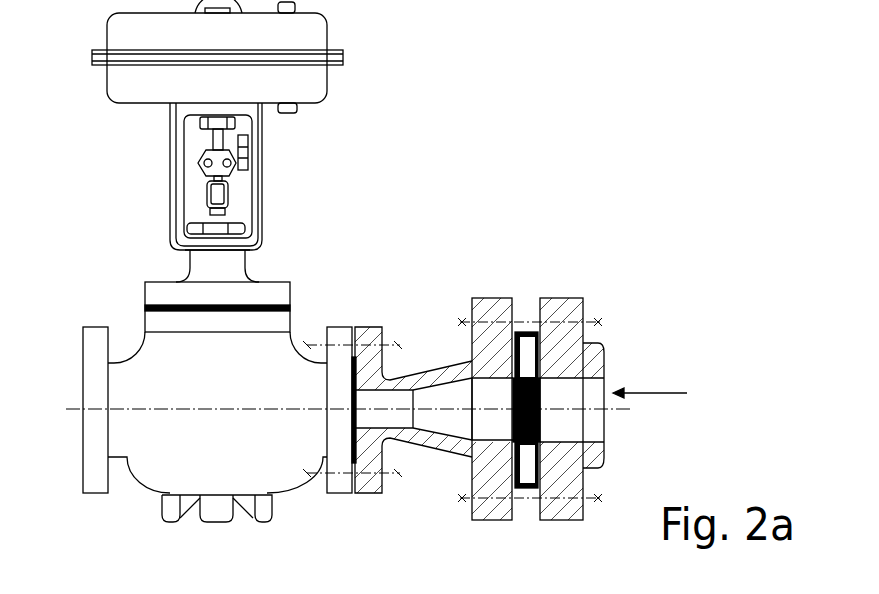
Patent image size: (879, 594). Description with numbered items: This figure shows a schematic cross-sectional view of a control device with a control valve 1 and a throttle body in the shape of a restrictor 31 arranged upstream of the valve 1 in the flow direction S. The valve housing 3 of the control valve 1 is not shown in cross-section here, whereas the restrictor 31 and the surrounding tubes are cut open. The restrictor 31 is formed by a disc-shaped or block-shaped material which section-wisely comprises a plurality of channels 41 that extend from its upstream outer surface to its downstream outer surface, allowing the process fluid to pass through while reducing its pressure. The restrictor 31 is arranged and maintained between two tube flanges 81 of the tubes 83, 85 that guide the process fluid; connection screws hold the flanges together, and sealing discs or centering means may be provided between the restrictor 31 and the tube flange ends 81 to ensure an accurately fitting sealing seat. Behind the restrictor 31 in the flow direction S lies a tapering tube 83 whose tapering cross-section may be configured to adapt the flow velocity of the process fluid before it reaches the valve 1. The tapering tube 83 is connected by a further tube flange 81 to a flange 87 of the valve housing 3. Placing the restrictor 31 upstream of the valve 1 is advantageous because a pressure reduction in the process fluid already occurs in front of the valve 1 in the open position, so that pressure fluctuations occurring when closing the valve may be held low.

The control valve 1 is at (198, 261).
The valve housing 3 is at (149, 378).
The restrictor 31 is at (527, 352).
The channels 41 is at (543, 400).
The tube flanges 81 is at (367, 483).
The tapering tube 83 is at (447, 370).
The tube 85 is at (593, 460).
The flange of the valve housing 87 is at (340, 483).
The flow direction S is at (637, 390).